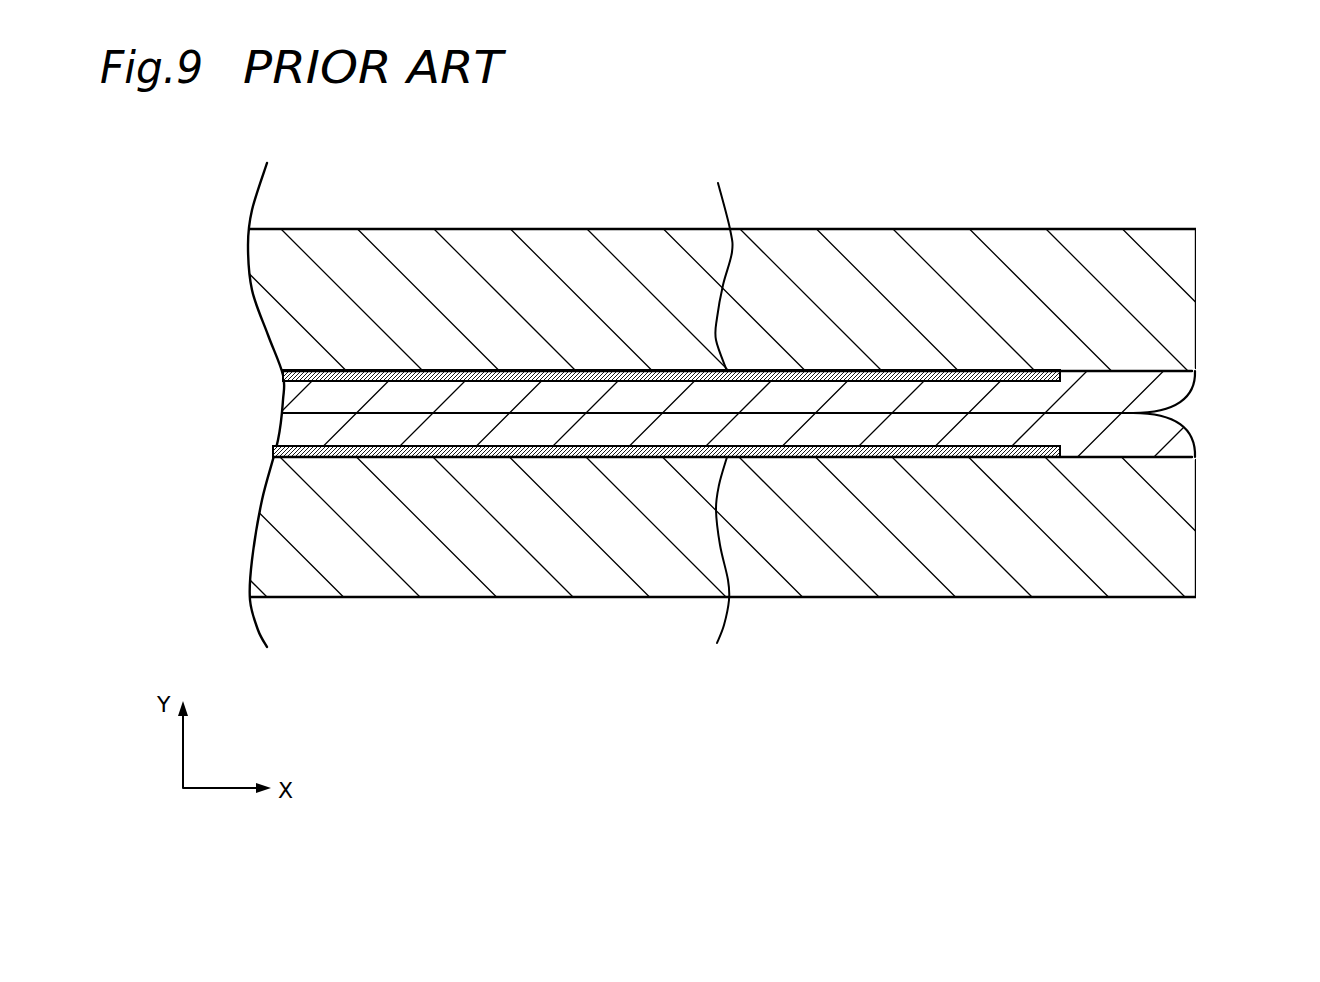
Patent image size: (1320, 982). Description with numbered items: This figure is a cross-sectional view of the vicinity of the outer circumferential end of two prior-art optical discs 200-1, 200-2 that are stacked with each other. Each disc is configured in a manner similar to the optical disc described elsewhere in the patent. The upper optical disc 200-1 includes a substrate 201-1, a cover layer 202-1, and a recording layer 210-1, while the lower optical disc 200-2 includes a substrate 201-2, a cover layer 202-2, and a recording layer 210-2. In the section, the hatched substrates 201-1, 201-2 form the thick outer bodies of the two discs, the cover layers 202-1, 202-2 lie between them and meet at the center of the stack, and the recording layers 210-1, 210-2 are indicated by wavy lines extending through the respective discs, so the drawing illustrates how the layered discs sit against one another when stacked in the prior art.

The optical disc 200-1 is at (990, 219).
The optical disc 200-2 is at (990, 610).
The substrate 201-1 is at (1180, 309).
The substrate 201-2 is at (1180, 528).
The cover layer 202-1 is at (1180, 385).
The cover layer 202-2 is at (1182, 439).
The recording layer 210-1 is at (718, 262).
The recording layer 210-2 is at (718, 569).